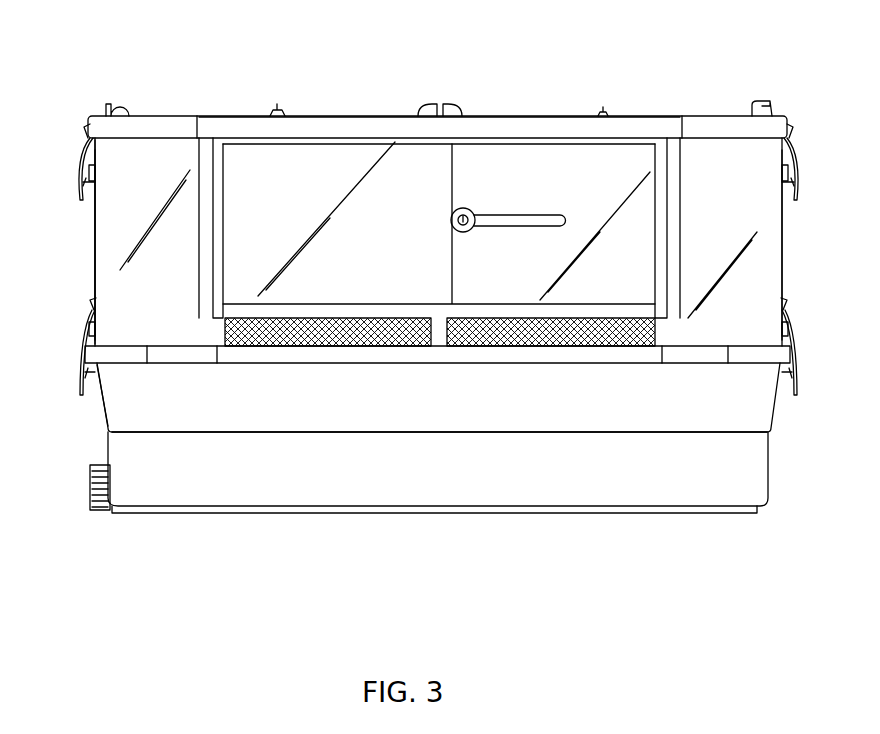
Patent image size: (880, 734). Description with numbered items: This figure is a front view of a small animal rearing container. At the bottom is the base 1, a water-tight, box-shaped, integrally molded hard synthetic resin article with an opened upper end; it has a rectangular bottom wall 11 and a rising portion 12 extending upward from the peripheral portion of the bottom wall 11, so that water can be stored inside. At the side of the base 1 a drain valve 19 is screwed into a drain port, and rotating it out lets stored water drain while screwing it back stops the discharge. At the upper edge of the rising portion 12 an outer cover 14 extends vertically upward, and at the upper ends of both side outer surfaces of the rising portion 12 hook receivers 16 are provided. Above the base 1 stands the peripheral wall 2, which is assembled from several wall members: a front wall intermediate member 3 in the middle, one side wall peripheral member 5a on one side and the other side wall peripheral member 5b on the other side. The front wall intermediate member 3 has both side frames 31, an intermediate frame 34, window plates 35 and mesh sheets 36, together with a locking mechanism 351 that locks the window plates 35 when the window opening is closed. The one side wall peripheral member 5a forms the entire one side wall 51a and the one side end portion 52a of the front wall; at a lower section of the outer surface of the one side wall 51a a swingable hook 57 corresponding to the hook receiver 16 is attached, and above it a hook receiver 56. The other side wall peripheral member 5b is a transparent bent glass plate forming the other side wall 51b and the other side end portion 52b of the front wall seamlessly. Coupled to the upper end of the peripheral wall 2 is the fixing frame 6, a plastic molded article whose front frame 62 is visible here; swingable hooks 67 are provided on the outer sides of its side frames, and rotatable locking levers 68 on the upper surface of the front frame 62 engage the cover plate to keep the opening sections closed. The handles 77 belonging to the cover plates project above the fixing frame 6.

The base 1 is at (250, 495).
The bottom wall 11 is at (353, 508).
The rising portion 12 is at (135, 405).
The outer cover 14 is at (298, 358).
The hook receiver 16 is at (82, 385).
The drain valve 19 is at (90, 495).
The peripheral wall 2 is at (90, 243).
The front wall intermediate member 3 is at (588, 178).
The side frame 31 is at (205, 250).
The intermediate frame 34 is at (369, 313).
The window plate 35 is at (355, 165).
The locking mechanism 351 is at (474, 212).
The mesh sheet 36 is at (492, 326).
The one side wall peripheral member 5a is at (786, 238).
The other side wall peripheral member 5b is at (92, 218).
The one side wall 51a is at (785, 262).
The other side wall 51b is at (95, 278).
The one side end portion of the front wall 52a is at (700, 246).
The other side end portion of the front wall 52b is at (182, 220).
The hook receiver 56 is at (97, 180).
The hook 57 is at (82, 345).
The fixing frame 6 is at (183, 112).
The front frame 62 is at (518, 128).
The hook 67 is at (80, 160).
The locking lever 68 is at (278, 110).
The handle 77 is at (116, 104).